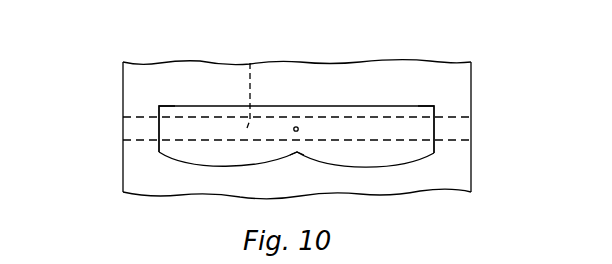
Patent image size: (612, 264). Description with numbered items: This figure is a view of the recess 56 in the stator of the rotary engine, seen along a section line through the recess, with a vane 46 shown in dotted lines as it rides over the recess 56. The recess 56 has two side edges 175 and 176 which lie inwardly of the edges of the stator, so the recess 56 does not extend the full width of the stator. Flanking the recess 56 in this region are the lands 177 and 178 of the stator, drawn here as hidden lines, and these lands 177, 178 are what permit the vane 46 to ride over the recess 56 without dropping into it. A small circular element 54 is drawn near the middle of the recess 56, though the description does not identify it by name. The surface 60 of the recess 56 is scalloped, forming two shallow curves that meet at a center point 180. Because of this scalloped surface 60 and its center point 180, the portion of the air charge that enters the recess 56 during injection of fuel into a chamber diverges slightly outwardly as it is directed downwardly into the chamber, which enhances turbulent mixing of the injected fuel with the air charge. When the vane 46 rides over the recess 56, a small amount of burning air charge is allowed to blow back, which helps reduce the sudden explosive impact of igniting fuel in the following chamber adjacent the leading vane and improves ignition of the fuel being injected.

The vane 46 is at (250, 62).
The pivot pin hole 54 is at (296, 126).
The recess 56 is at (359, 112).
The surface of recess 60 is at (381, 164).
The edge of recess 175 is at (162, 111).
The edge of recess 176 is at (430, 110).
The land of stator 177 is at (130, 130).
The land of stator 178 is at (455, 131).
The center point 180 is at (297, 153).